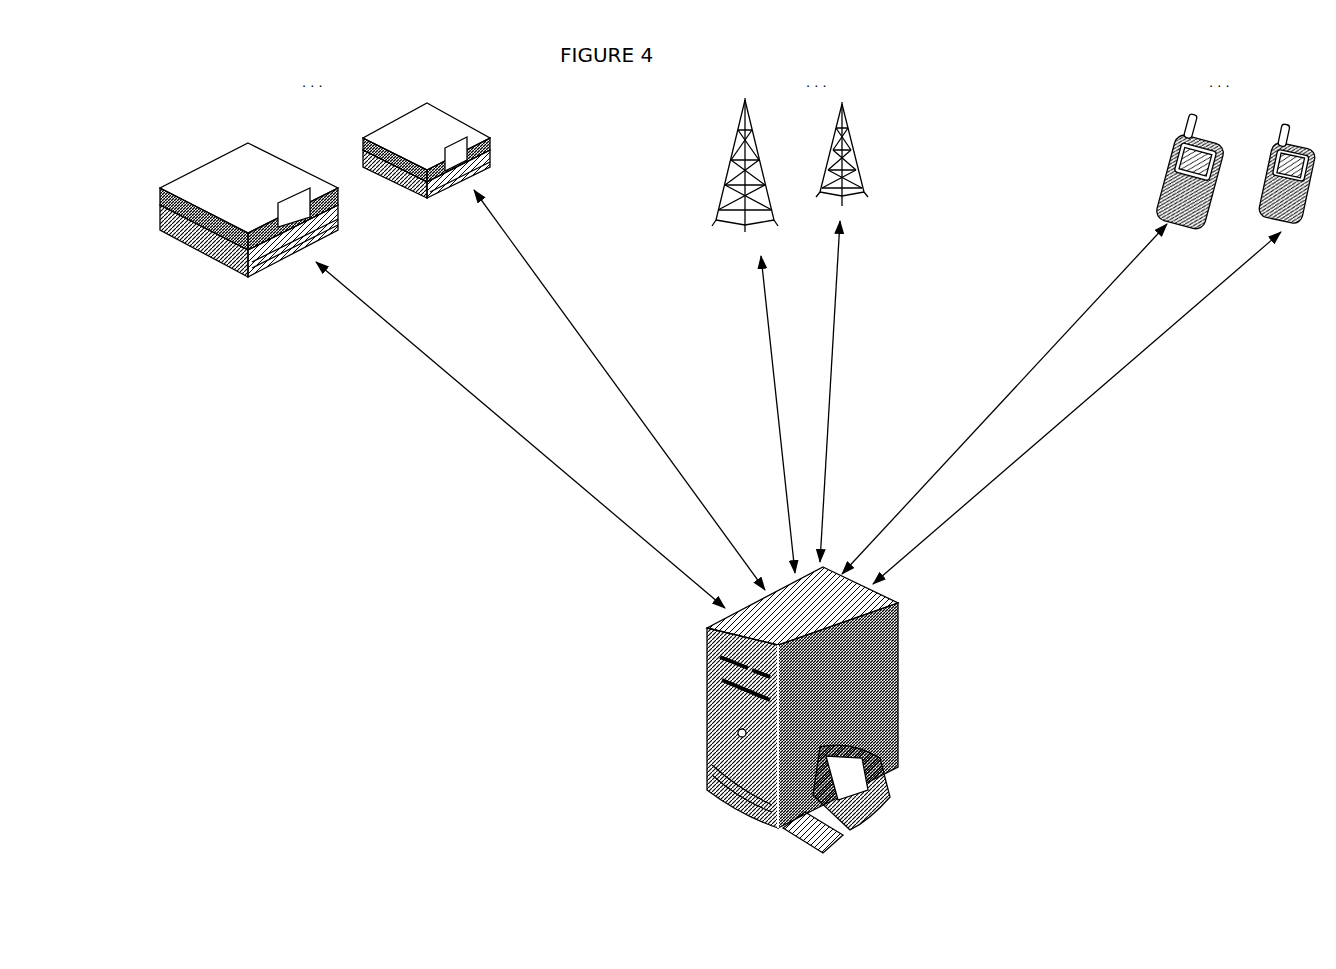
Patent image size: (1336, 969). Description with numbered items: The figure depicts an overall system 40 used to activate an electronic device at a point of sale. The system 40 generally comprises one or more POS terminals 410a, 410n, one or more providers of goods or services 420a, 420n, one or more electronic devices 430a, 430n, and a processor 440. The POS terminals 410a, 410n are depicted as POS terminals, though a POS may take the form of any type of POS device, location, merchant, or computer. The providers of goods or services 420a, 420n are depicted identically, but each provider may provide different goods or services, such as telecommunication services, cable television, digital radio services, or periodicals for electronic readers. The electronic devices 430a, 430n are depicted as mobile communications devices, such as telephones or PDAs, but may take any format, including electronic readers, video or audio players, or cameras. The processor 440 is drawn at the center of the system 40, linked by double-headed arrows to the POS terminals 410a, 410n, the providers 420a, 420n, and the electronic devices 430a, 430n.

The system 40 is at (250, 521).
The POS 410a is at (205, 163).
The POS 410n is at (412, 113).
The provider of goods or services 420a is at (735, 156).
The provider of goods or services 420n is at (853, 156).
The electronic device 430a is at (1163, 138).
The electronic device 430n is at (1280, 132).
The processor 440 is at (897, 706).